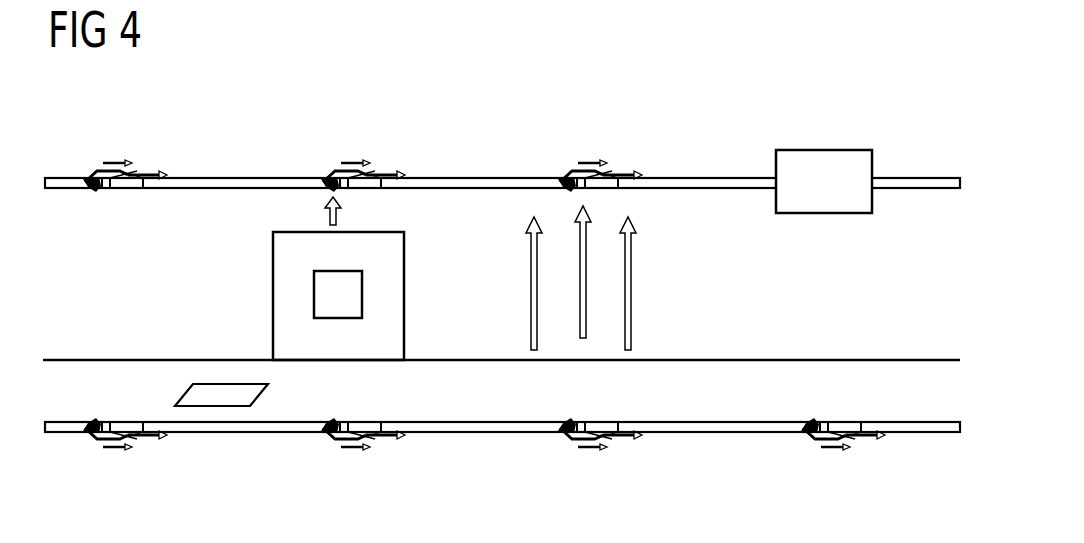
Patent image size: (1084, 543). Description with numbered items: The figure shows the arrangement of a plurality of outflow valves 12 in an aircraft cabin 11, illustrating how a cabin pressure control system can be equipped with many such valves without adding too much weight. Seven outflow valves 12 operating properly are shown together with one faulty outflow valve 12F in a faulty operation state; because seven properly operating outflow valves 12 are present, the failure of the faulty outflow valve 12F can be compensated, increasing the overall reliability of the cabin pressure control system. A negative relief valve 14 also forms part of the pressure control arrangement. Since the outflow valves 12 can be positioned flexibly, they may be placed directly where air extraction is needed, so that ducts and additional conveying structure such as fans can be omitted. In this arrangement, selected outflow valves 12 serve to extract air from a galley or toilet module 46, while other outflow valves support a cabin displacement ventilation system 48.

The aircraft cabin 11 is at (205, 237).
The outflow valve 12 is at (88, 178).
The faulty outflow valve 12F is at (823, 150).
The negative relief valve 14 is at (268, 395).
The galley or toilet module 46 is at (393, 296).
The cabin displacement ventilation system 48 is at (628, 283).